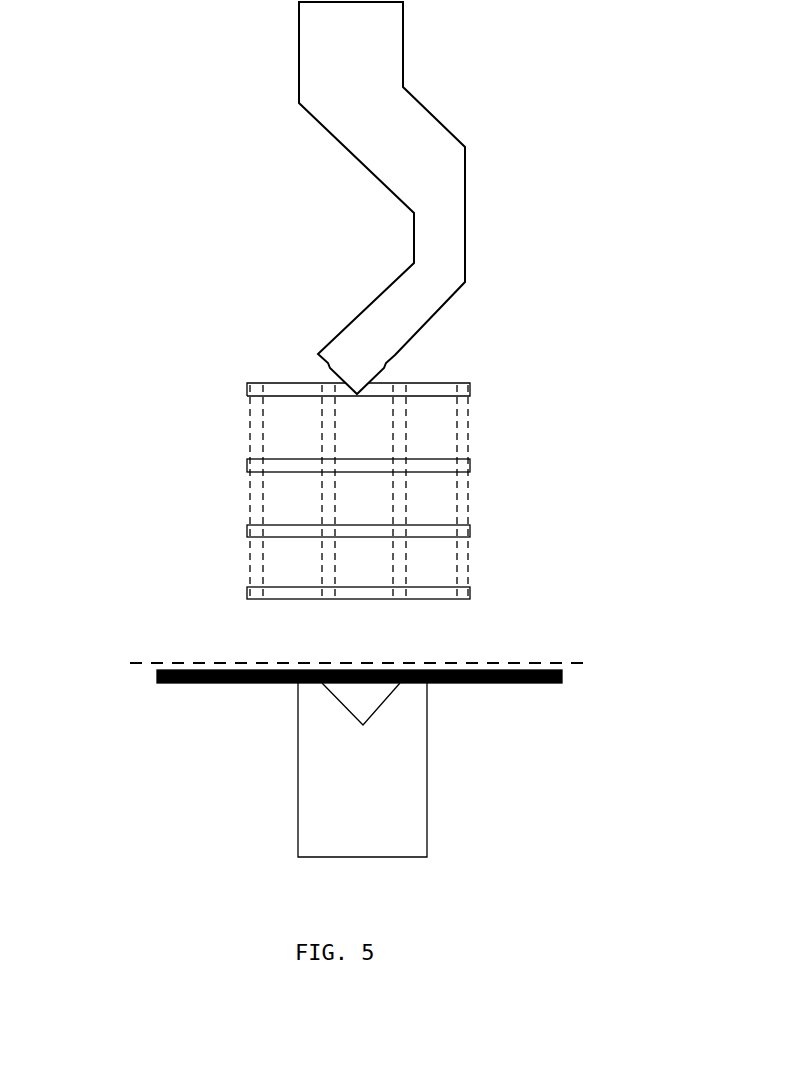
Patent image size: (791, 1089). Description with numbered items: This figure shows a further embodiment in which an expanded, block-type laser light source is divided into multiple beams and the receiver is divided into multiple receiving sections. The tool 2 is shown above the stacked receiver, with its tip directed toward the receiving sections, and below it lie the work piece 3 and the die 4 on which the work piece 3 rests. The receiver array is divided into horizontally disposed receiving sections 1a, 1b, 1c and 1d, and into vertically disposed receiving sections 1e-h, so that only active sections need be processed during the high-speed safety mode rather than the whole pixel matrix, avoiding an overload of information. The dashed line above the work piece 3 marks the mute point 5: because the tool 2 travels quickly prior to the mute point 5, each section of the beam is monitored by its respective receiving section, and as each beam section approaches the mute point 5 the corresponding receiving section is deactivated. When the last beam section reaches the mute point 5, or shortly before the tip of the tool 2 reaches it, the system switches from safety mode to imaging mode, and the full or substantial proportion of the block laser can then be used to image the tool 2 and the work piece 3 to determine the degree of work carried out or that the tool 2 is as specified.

The tool 2 is at (467, 147).
The horizontally disposed receiving section 1a is at (472, 387).
The horizontally disposed receiving section 1b is at (474, 466).
The horizontally disposed receiving section 1c is at (474, 528).
The horizontally disposed receiving section 1d is at (474, 592).
The vertically disposed receiving sections 1e-h is at (447, 427).
The work piece 3 is at (566, 683).
The lower die 4 is at (428, 770).
The mute point 5 is at (128, 663).